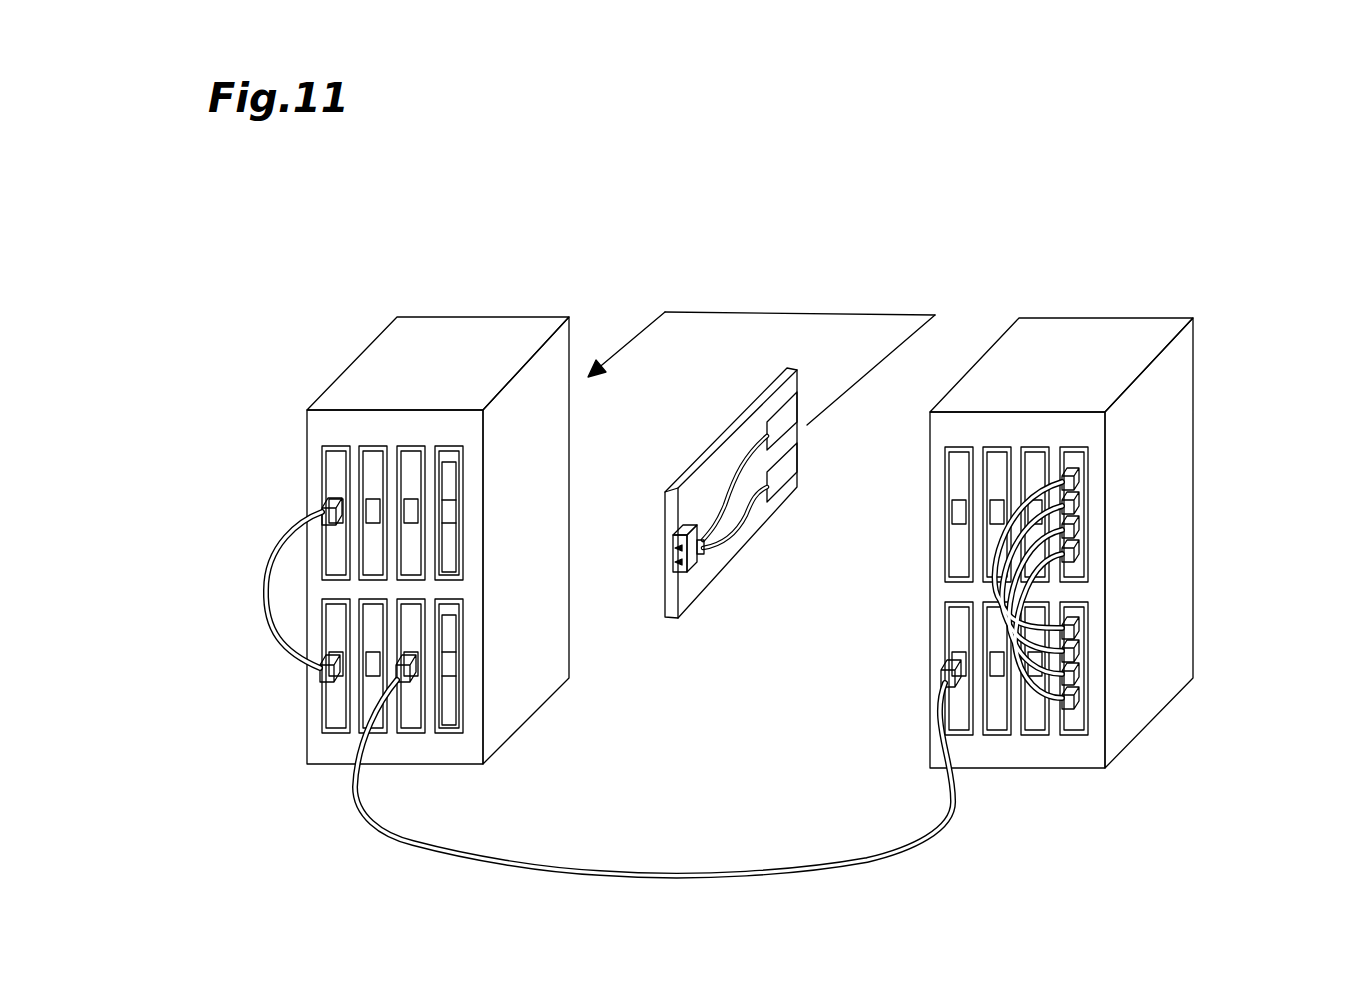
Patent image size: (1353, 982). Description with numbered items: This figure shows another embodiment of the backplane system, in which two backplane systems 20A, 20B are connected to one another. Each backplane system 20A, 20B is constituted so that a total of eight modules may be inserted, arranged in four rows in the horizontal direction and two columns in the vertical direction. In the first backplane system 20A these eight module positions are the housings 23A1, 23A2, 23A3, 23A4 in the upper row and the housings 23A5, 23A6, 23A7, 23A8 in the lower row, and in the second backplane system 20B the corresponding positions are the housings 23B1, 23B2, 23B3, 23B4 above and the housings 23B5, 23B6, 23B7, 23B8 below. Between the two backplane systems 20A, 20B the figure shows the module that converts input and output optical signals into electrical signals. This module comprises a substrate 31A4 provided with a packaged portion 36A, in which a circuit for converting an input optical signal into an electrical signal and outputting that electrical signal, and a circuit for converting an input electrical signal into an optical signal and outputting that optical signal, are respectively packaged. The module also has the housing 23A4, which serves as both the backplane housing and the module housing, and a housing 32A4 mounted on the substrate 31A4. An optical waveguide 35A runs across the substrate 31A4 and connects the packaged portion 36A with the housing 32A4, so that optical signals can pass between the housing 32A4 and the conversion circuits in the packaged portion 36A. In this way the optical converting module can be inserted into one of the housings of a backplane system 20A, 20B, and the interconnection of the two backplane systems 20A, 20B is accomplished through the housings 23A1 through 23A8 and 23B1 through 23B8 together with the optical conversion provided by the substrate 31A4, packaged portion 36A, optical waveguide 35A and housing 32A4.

The backplane system 20A is at (488, 323).
The backplane system 20B is at (1098, 333).
The housing 23A1 is at (322, 455).
The housing 23A2 is at (365, 450).
The housing 23A3 is at (410, 450).
The housing 23A4 is at (455, 450).
The housing 23A5 is at (333, 710).
The housing 23A6 is at (368, 710).
The housing 23A7 is at (413, 715).
The housing 23A8 is at (453, 702).
The housing 23B1 is at (919, 488).
The housing 23B2 is at (997, 455).
The housing 23B3 is at (1033, 457).
The housing 23B4 is at (1063, 457).
The housing 23B5 is at (962, 737).
The housing 23B6 is at (1000, 737).
The housing 23B7 is at (1040, 737).
The housing 23B8 is at (1087, 612).
The substrate 31A4 is at (718, 437).
The housing 32A4 is at (672, 615).
The optical waveguide 35A is at (722, 553).
The packaged portion 36A is at (788, 493).